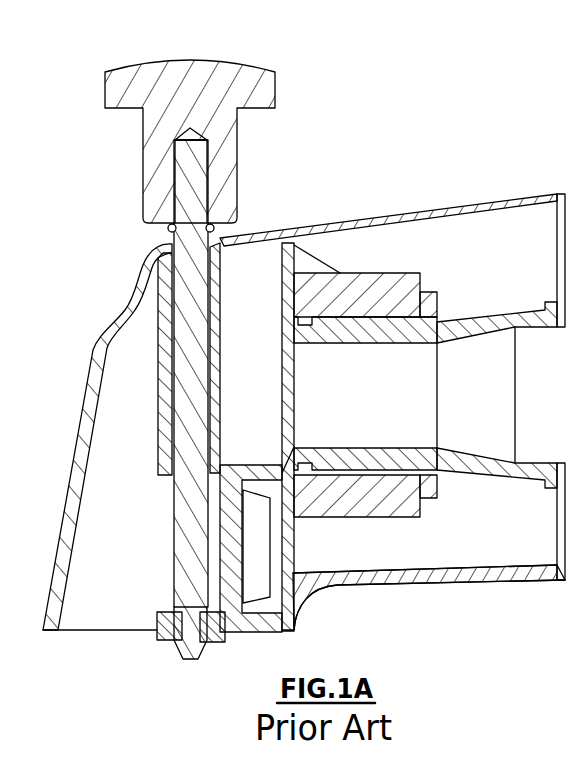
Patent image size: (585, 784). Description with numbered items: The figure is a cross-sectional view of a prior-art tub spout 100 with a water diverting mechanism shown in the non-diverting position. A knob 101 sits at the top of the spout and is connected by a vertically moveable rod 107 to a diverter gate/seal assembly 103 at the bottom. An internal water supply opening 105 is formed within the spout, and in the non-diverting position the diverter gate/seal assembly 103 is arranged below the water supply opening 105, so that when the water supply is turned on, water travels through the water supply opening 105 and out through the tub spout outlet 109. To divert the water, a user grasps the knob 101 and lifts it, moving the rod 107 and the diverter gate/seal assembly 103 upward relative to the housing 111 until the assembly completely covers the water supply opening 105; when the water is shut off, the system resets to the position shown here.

The tub spout 100 is at (84, 286).
The knob 101 is at (207, 60).
The diverter gate/seal assembly 103 is at (250, 620).
The water supply opening 105 is at (288, 413).
The rod 107 is at (173, 368).
The tub spout outlet 109 is at (68, 632).
The housing 111 is at (387, 215).